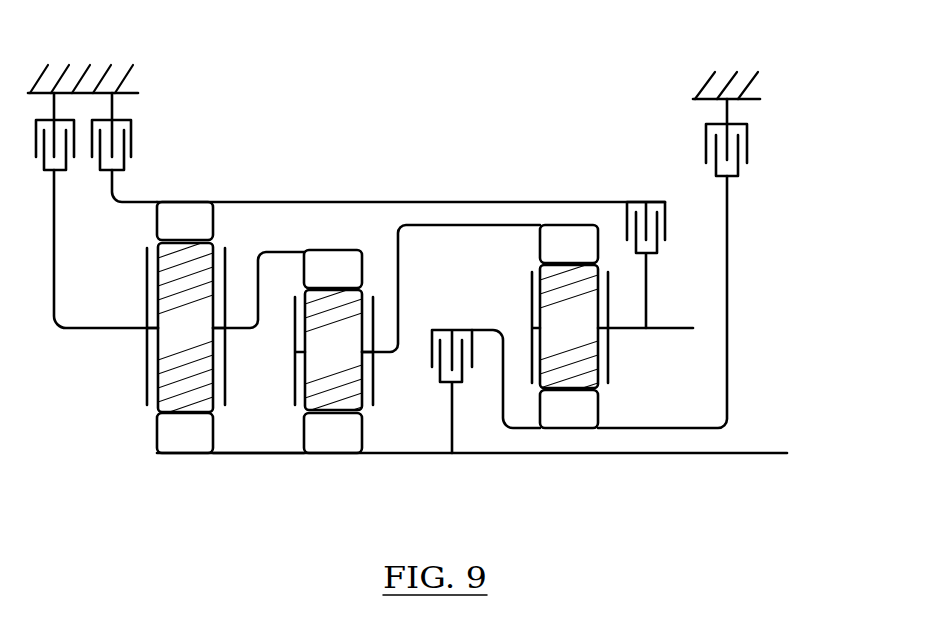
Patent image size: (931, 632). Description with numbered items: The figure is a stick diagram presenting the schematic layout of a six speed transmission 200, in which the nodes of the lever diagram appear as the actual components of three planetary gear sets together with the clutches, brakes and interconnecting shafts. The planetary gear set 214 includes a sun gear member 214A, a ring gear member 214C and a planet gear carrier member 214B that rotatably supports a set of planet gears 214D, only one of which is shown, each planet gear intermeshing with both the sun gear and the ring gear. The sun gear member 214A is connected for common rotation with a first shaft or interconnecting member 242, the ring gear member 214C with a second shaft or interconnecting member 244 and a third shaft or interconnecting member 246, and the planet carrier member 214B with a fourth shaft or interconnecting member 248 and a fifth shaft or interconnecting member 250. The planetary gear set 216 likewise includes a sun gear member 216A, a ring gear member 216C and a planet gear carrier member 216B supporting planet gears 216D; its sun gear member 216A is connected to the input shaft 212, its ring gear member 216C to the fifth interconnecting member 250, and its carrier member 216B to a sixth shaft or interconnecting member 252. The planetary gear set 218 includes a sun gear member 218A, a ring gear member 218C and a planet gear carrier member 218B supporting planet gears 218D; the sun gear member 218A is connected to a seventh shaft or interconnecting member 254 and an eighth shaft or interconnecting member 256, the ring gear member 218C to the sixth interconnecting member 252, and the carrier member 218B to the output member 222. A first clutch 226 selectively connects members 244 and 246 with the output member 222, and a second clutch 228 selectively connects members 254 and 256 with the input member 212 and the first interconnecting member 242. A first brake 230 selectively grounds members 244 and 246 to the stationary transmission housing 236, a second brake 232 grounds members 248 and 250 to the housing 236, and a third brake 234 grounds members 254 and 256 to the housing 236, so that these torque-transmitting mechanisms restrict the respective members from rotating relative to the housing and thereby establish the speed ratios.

The six speed transmission 200 is at (723, 58).
The input shaft 212 is at (709, 455).
The planetary gear set 214 is at (159, 337).
The sun gear member 214A is at (177, 440).
The planet gear carrier member 214B is at (148, 383).
The ring gear member 214C is at (183, 221).
The planet gears 214D is at (212, 343).
The planetary gear set 216 is at (356, 337).
The sun gear member 216A is at (316, 456).
The planet gear carrier member 216B is at (373, 383).
The ring gear member 216C is at (342, 262).
The planet gears 216D is at (359, 362).
The planetary gear set 218 is at (595, 322).
The sun gear member 218A is at (562, 418).
The planet gear carrier member 218B is at (608, 370).
The ring gear member 218C is at (560, 238).
The planet gears 218D is at (595, 341).
The output member 222 is at (673, 330).
The first clutch 226 is at (667, 212).
The second clutch 228 is at (430, 353).
The first brake 230 is at (133, 137).
The second brake 232 is at (76, 147).
The third brake 234 is at (706, 135).
The transmission housing 236 is at (130, 78).
The first shaft or interconnecting member 242 is at (272, 456).
The second shaft or interconnecting member 244 is at (138, 203).
The third shaft or interconnecting member 246 is at (280, 200).
The fourth shaft or interconnecting member 248 is at (55, 292).
The fifth shaft or interconnecting member 250 is at (235, 330).
The sixth shaft or interconnecting member 252 is at (448, 222).
The seventh shaft or interconnecting member 254 is at (480, 328).
The eighth shaft or interconnecting member 256 is at (727, 202).